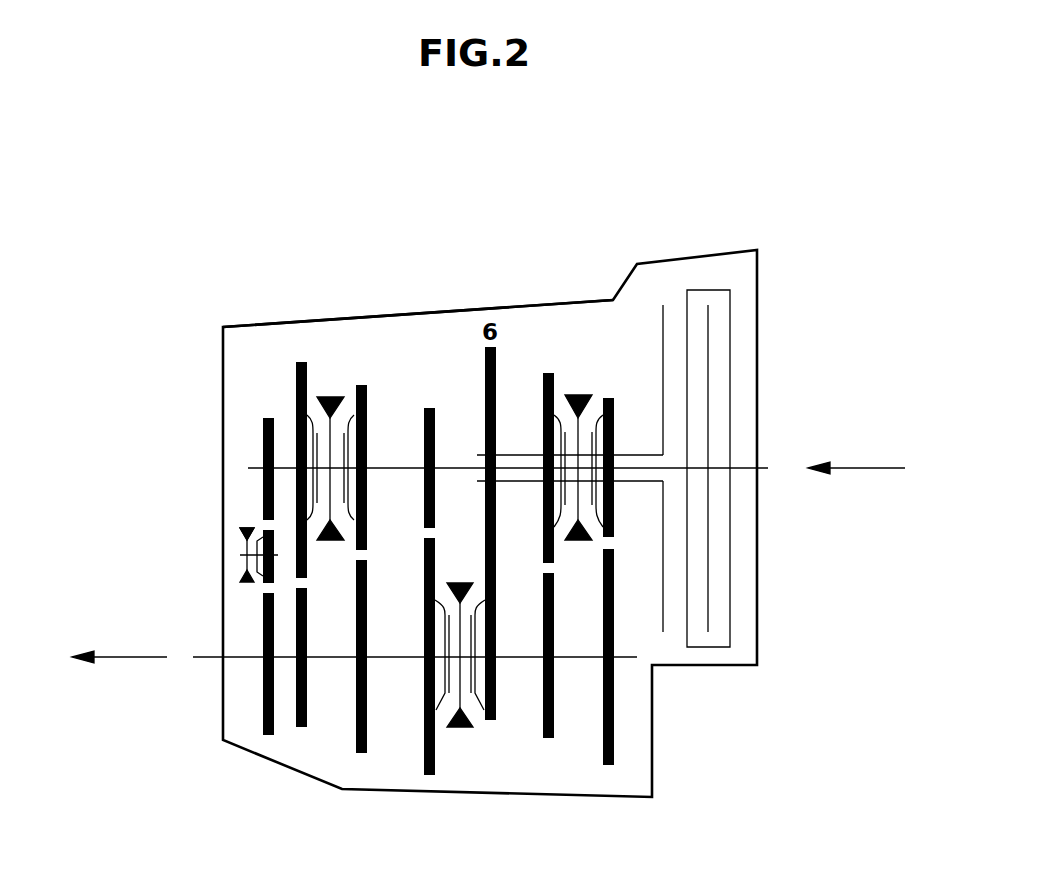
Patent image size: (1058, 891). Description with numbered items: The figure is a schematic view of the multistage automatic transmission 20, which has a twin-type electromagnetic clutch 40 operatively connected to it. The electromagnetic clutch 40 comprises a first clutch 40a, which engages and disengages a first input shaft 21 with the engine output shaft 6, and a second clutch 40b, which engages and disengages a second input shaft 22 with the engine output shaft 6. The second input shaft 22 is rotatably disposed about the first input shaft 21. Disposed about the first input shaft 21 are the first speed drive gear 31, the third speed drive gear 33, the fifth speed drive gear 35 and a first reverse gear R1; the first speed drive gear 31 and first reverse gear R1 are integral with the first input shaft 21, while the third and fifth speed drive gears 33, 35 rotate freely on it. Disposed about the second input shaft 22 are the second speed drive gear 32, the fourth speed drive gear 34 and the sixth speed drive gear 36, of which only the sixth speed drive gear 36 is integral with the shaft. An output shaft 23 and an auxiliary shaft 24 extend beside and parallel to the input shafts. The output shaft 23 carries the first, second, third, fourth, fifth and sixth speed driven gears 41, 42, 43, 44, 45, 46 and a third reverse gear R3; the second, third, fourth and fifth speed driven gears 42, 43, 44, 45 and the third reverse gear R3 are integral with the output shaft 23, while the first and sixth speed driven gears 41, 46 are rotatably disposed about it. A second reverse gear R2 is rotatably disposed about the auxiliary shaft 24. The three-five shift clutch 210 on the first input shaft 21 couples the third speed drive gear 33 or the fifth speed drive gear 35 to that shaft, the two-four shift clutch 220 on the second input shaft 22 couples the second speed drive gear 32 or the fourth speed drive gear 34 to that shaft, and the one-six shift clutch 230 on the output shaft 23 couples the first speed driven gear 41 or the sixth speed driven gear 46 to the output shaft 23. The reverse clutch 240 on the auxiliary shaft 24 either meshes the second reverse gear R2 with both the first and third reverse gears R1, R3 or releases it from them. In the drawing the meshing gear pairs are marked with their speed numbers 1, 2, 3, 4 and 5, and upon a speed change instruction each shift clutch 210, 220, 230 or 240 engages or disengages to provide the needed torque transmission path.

The multistage automatic transmission 20 is at (383, 300).
The first input shaft 21 is at (258, 460).
The second input shaft 22 is at (630, 452).
The output shaft 23 is at (241, 656).
The auxiliary shaft 24 is at (258, 556).
The first speed drive gear 31 is at (433, 420).
The second speed drive gear 32 is at (617, 394).
The third speed drive gear 33 is at (367, 416).
The fourth speed drive gear 34 is at (543, 395).
The fifth speed drive gear 35 is at (294, 398).
The sixth speed drive gear 36 is at (484, 384).
The first speed driven gear 41 is at (428, 777).
The second speed driven gear 42 is at (609, 767).
The third speed driven gear 43 is at (363, 756).
The fourth speed driven gear 44 is at (548, 740).
The fifth speed driven gear 45 is at (298, 728).
The sixth speed driven gear 46 is at (489, 722).
The electromagnetic clutch 40 is at (700, 243).
The first clutch 40a is at (710, 330).
The second clutch 40b is at (658, 332).
The engine output shaft 6 is at (766, 466).
The 3–5 shift clutch 210 is at (334, 545).
The 2–4 shift clutch 220 is at (576, 545).
The 1–6 shift clutch 230 is at (460, 588).
The reverse clutch 240 is at (246, 528).
The first reverse gear R1 is at (264, 418).
The second reverse gear R2 is at (262, 527).
The third reverse gear R3 is at (264, 635).
The first speed gear pair 1 is at (429, 453).
The second speed gear pair 2 is at (608, 452).
The third speed gear pair 3 is at (361, 453).
The fourth speed gear pair 4 is at (548, 453).
The fifth speed gear pair 5 is at (301, 456).